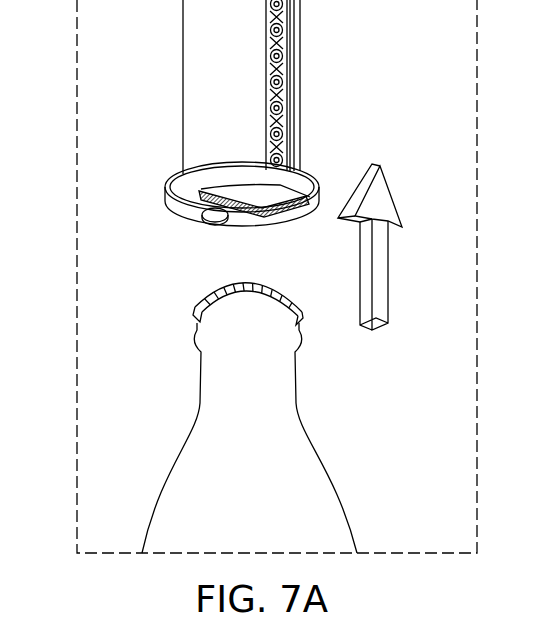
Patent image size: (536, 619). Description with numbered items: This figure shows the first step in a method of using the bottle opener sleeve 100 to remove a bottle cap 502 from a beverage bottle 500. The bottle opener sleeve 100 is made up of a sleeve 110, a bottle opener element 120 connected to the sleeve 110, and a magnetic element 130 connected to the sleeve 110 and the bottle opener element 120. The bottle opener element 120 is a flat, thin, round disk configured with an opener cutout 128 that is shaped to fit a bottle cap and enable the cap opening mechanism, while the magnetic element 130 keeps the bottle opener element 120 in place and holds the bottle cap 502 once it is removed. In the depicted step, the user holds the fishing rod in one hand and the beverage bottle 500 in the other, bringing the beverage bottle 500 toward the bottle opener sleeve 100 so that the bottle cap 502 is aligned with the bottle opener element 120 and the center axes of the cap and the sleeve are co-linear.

The bottle opener sleeve 100 is at (112, 78).
The sleeve 110 is at (184, 113).
The bottle opener element 120 is at (175, 207).
The opener cutout 128 is at (292, 220).
The magnetic element 130 is at (207, 224).
The beverage bottle 500 is at (320, 467).
The bottle cap 502 is at (200, 293).